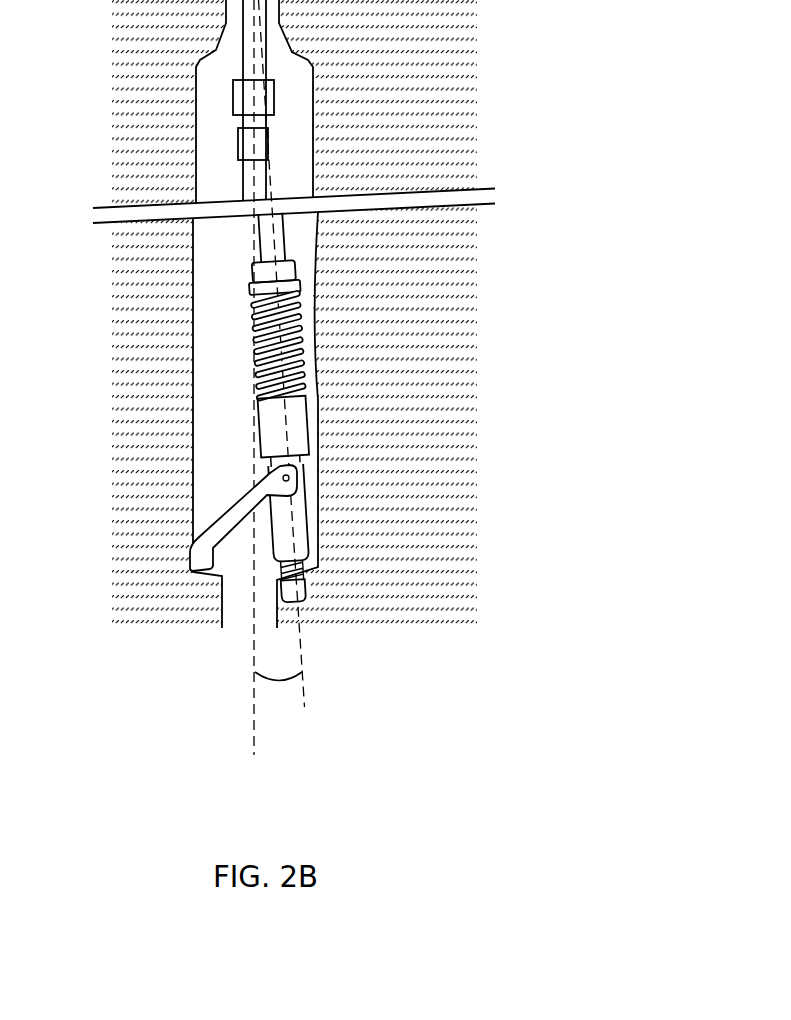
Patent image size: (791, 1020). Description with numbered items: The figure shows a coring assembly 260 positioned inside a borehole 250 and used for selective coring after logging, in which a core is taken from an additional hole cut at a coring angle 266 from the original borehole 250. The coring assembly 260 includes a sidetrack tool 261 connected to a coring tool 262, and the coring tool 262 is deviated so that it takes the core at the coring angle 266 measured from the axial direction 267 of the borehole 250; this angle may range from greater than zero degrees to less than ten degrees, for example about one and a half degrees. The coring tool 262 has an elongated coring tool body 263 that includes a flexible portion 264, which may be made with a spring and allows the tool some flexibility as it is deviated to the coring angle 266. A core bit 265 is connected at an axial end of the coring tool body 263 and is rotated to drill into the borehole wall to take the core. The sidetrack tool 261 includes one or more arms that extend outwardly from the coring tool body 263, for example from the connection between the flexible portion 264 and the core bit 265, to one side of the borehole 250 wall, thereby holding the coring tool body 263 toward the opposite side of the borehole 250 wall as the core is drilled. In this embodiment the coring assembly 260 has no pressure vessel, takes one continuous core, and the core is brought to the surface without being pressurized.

The borehole 250 is at (193, 354).
The coring assembly 260 is at (235, 257).
The sidetrack tool 261 is at (225, 523).
The coring tool 262 is at (283, 270).
The coring tool body 263 is at (300, 437).
The flexible portion 264 is at (293, 340).
The core bit 265 is at (305, 593).
The coring angle 266 is at (280, 356).
The axial direction 267 is at (253, 395).